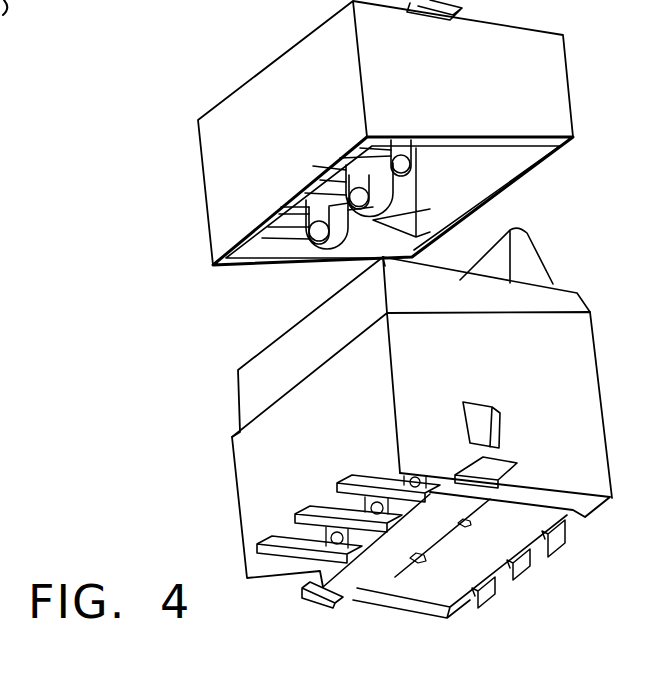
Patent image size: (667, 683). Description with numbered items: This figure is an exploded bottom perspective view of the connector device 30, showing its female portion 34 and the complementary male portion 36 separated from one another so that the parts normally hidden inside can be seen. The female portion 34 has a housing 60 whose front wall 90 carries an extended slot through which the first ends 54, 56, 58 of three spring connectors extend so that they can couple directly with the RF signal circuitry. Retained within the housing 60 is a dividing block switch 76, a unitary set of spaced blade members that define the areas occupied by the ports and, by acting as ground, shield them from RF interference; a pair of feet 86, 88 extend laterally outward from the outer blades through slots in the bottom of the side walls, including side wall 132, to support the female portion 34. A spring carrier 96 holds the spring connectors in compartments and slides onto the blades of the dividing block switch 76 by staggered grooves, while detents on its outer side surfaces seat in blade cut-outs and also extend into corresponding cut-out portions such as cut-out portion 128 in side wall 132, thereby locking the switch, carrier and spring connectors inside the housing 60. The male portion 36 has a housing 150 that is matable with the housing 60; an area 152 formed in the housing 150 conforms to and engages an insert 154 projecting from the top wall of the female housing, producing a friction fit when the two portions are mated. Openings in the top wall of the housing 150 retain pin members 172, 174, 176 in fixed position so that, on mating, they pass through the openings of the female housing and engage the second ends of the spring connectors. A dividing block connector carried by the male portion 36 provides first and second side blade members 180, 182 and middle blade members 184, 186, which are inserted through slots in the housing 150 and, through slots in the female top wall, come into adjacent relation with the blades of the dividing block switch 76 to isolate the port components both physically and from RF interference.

The device 30 is at (180, 313).
The female portion 34 is at (210, 382).
The male portion 36 is at (228, 58).
The first end 54 is at (256, 542).
The first end 56 is at (322, 516).
The first end 58 is at (358, 478).
The housing 60 is at (229, 493).
The dividing block switch 76 is at (490, 556).
The foot 86 is at (510, 466).
The foot 88 is at (321, 594).
The front wall 90 is at (243, 455).
The spring carrier 96 is at (380, 570).
The cut-out portion 128 is at (493, 420).
The side wall 132 is at (517, 357).
The housing 150 is at (198, 172).
The area 152 is at (492, 182).
The insert 154 is at (527, 253).
The pin member 172 is at (306, 207).
The pin member 174 is at (338, 172).
The pin member 176 is at (403, 153).
The first side blade member 180 is at (281, 233).
The second side blade member 182 is at (451, 157).
The middle blade member 184 is at (316, 170).
The middle blade member 186 is at (345, 152).